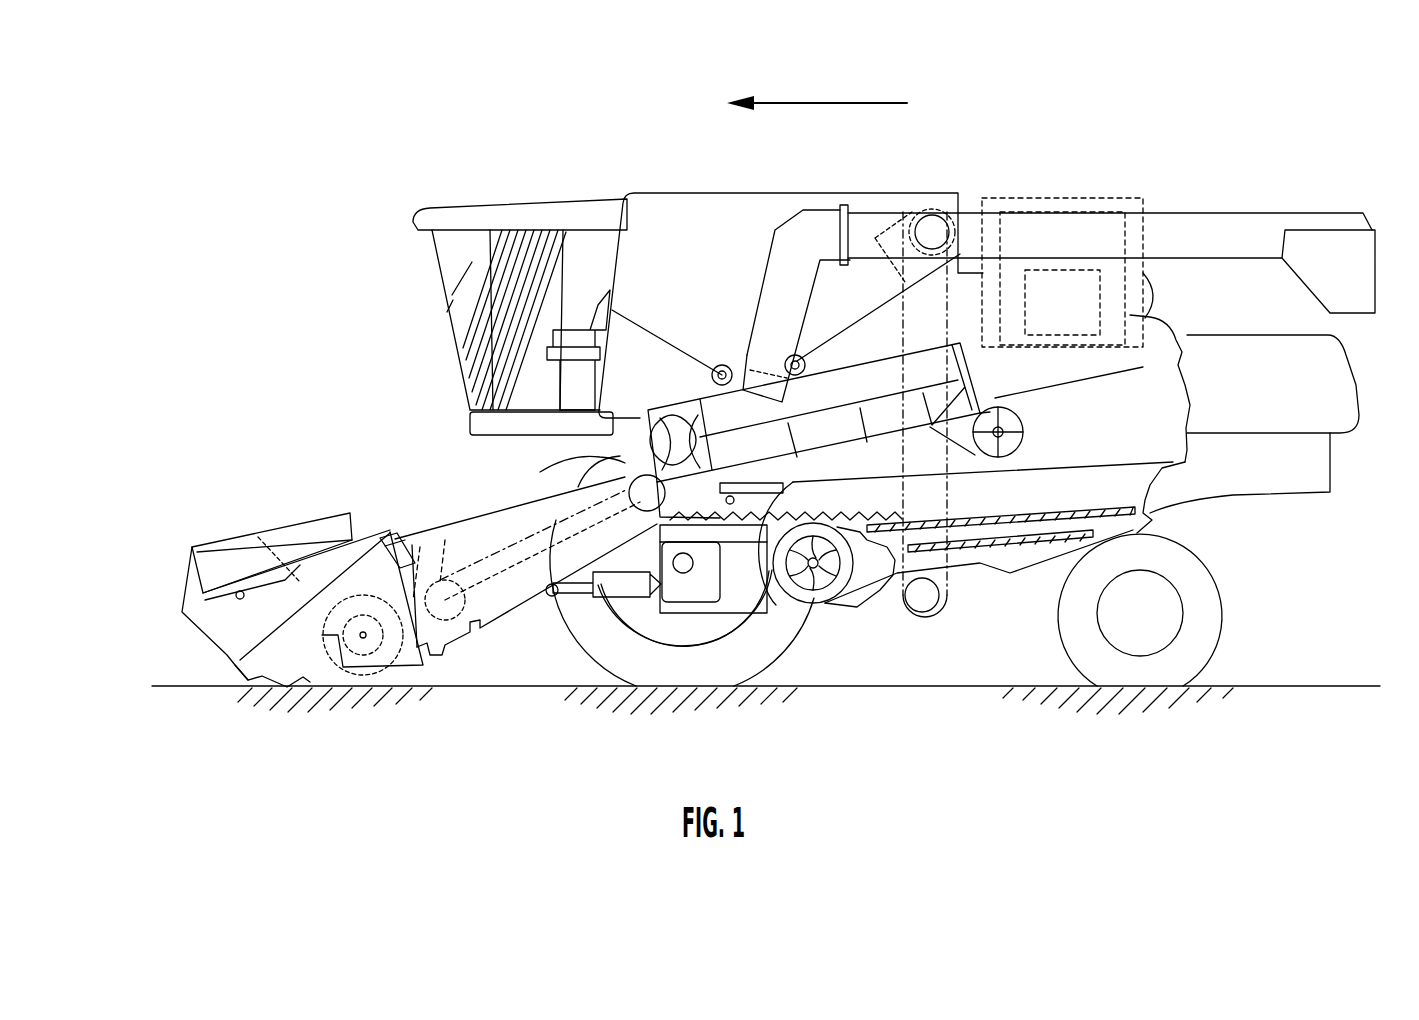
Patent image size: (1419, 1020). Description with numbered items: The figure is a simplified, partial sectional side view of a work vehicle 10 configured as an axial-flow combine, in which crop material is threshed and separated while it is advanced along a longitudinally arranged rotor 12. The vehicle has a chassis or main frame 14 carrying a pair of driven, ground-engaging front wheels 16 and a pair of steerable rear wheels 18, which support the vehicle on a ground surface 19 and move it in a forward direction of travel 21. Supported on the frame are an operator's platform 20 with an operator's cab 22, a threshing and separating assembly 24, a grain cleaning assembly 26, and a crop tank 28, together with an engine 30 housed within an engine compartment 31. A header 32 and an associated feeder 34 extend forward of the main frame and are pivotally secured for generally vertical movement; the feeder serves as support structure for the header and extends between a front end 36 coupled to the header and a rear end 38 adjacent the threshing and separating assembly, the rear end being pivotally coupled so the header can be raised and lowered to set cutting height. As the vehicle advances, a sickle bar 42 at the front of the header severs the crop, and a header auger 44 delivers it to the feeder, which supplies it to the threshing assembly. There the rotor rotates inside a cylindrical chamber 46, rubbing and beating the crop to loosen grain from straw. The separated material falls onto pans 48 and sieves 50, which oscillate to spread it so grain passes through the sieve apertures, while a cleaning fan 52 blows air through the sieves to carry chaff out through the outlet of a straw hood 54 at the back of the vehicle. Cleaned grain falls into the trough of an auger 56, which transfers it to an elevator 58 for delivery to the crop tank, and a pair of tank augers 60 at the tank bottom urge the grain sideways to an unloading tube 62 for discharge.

The work vehicle 10 is at (472, 150).
The rotor 12 is at (680, 413).
The main frame 14 is at (1150, 520).
The front wheels 16 is at (620, 650).
The rear wheels 18 is at (1210, 622).
The ground surface 19 is at (170, 680).
The operator's platform 20 is at (480, 422).
The forward direction of travel 21 is at (838, 103).
The operator's cab 22 is at (460, 316).
The threshing and separating assembly 24 is at (826, 410).
The grain cleaning assembly 26 is at (885, 622).
The crop tank 28 is at (718, 193).
The engine 30 is at (1050, 340).
The engine compartment 31 is at (1110, 347).
The header 32 is at (234, 515).
The feeder 34 is at (452, 510).
The front end 36 is at (360, 587).
The rear end 38 is at (600, 465).
The sickle bar 42 is at (247, 677).
The header auger 44 is at (363, 640).
The cylindrical chamber 46 is at (862, 370).
The pans 48 is at (827, 510).
The sieves 50 is at (980, 496).
The cleaning fan 52 is at (806, 592).
The straw hood 54 is at (1348, 398).
The auger 56 is at (922, 600).
The elevator 58 is at (952, 280).
The tank augers 60 is at (720, 362).
The unloading tube 62 is at (1200, 230).